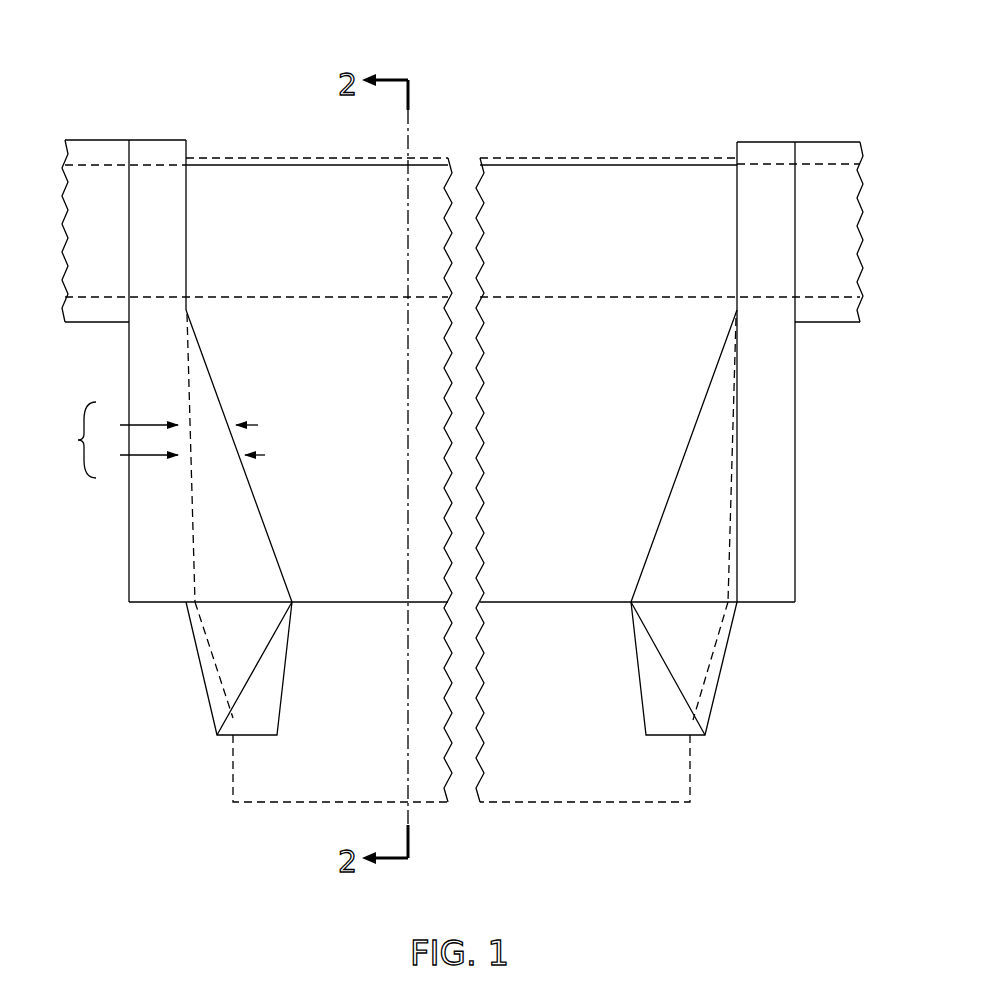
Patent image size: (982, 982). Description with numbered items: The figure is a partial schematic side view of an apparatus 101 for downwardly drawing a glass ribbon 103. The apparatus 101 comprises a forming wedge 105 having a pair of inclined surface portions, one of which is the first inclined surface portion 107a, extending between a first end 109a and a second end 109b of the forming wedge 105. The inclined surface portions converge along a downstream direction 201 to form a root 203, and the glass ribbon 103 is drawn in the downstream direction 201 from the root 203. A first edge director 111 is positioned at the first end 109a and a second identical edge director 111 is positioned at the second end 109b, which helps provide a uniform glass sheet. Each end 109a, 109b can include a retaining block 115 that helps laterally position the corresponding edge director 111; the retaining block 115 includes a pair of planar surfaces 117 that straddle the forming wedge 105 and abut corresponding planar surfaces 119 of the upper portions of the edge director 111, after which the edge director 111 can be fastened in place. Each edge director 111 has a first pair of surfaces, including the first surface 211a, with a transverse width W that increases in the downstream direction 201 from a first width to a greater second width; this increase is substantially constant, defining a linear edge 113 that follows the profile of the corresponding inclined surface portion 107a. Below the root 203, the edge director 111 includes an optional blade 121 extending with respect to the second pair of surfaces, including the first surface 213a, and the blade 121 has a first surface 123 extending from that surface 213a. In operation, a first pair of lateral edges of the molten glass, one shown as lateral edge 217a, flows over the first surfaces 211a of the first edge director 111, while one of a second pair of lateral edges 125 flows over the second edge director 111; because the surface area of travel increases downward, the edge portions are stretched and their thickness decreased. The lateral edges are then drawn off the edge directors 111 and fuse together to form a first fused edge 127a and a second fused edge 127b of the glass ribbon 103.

The apparatus 101 is at (624, 76).
The glass ribbon 103 is at (632, 788).
The forming wedge 105 is at (539, 208).
The first inclined surface portion 107a is at (368, 462).
The first end 109a is at (198, 146).
The second end 109b is at (722, 146).
The edge director 111 is at (243, 398).
The linear edge 113 is at (259, 503).
The retaining block 115 is at (157, 604).
The planar surface 117 is at (196, 525).
The planar surface 119 is at (178, 512).
The blade 121 is at (255, 750).
The first surface 123 is at (266, 690).
The lateral edge 125 is at (730, 563).
The first fused edge 127a is at (232, 768).
The second fused edge 127b is at (696, 795).
The downstream direction 201 is at (551, 822).
The root 203 is at (524, 607).
The first surface 211a is at (228, 557).
The first surface of the second pair of surfaces 213a is at (256, 625).
The lateral edge 217a is at (190, 563).
The transverse width W is at (159, 440).